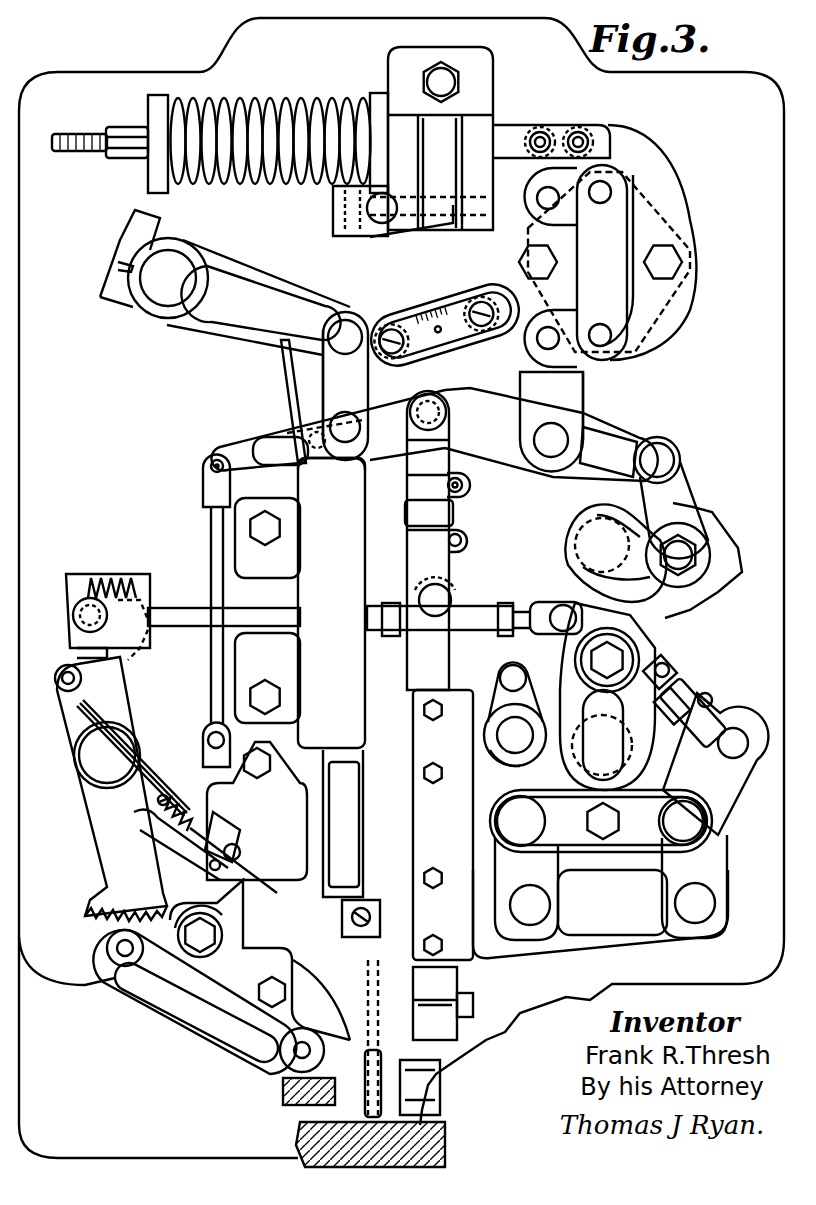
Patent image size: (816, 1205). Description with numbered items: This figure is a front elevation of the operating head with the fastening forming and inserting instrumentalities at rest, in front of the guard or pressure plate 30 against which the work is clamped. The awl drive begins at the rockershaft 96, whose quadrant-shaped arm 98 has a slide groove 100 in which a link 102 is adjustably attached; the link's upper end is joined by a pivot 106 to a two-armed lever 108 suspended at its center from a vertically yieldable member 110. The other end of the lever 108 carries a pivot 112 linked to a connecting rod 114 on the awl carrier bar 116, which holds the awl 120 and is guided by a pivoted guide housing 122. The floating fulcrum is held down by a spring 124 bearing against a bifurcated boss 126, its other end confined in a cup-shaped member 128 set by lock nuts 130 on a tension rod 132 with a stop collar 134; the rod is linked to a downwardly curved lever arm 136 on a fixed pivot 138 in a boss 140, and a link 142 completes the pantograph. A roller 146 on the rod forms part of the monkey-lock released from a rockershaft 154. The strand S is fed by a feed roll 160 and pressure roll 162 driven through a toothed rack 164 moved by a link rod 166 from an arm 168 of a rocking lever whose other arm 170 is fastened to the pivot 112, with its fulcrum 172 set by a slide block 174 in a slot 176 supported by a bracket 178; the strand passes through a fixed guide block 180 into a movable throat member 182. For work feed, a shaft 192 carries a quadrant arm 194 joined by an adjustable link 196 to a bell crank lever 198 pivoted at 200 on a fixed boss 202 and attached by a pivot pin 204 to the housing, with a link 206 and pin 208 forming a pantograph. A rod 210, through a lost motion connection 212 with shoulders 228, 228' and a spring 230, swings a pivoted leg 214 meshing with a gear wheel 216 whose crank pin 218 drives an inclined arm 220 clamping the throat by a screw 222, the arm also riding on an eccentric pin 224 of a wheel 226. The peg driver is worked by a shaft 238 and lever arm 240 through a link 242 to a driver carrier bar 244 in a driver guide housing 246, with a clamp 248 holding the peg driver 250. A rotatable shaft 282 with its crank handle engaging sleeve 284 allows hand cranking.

The guard or pressure plate 30 is at (320, 1126).
The rockershaft 96 is at (575, 523).
The quadrant-shaped arm 98 is at (578, 576).
The slide groove 100 is at (665, 598).
The link 102 is at (683, 488).
The pivot 106 is at (676, 458).
The two-armed lever 108 is at (630, 441).
The vertically yieldable member 110 is at (584, 396).
The pivot 112 is at (433, 398).
The connecting rod 114 is at (466, 486).
The awl carrier bar 116 is at (450, 654).
The awl 120 is at (405, 1052).
The guide housing 122 is at (413, 830).
The spring 124 is at (264, 104).
The bifurcated boss 126 is at (417, 132).
The cup-shaped member 128 is at (160, 96).
The lock nuts 130 is at (136, 158).
The tension rod 132 is at (68, 134).
The stop collar 134 is at (497, 126).
The downwardly curved lever arm 136 is at (660, 172).
The fixed pivot 138 is at (551, 352).
The boss 140 is at (612, 352).
The link 142 is at (568, 226).
The roller 146 is at (432, 150).
The rockershaft 154 is at (378, 220).
The feed roll 160 is at (233, 834).
The pressure roll 162 is at (218, 875).
The toothed rack 164 is at (220, 816).
The pivoted link rod 166 is at (210, 522).
The arm 168 is at (250, 440).
The arm 170 is at (398, 458).
The medial fulcrum point 172 is at (310, 450).
The slide block 174 is at (300, 466).
The longitudinal slot 176 is at (250, 451).
The bracket 178 is at (302, 366).
The fixed guide block 180 is at (350, 957).
The movable throat member 182 is at (432, 1086).
The shaft 192 is at (632, 765).
The quadrant arm 194 is at (571, 668).
The adjustable link 196 is at (712, 697).
The bell crank lever 198 is at (722, 810).
The pivot 200 is at (702, 828).
The fixed boss 202 is at (660, 842).
The pivot pin 204 is at (700, 918).
The link 206 is at (555, 882).
The pin 208 is at (515, 836).
The horizontally extending rod 210 is at (181, 607).
The yielding lost motion connection 212 is at (100, 561).
The pivoted leg 214 is at (94, 823).
The driven gear wheel 216 is at (90, 918).
The eccentric crank pin 218 is at (118, 965).
The inclined arm 220 is at (184, 1022).
The screw 222 is at (284, 1103).
The eccentric pin 224 is at (290, 1058).
The rotatable wheel 226 is at (262, 1004).
The abutting shoulder 228 is at (124, 641).
The abutting shoulder 228' is at (161, 631).
The spring 230 is at (112, 580).
The shaft 238 is at (176, 262).
The lever arm 240 is at (312, 304).
The link 242 is at (320, 388).
The driver carrier bar 244 is at (356, 796).
The driver guide housing 246 is at (309, 567).
The clamp 248 is at (382, 908).
The peg driver 250 is at (370, 1030).
The rotatable shaft 282 is at (492, 738).
The crank handle engaging sleeve 284 is at (497, 758).
The strand S is at (78, 706).